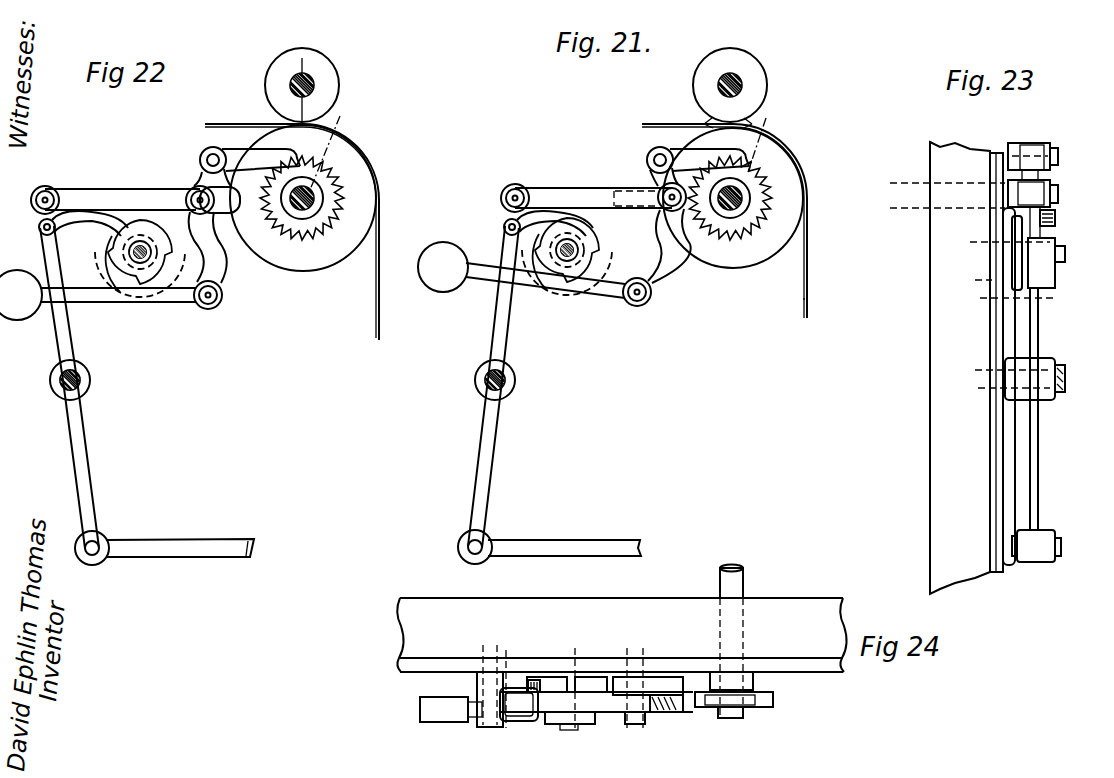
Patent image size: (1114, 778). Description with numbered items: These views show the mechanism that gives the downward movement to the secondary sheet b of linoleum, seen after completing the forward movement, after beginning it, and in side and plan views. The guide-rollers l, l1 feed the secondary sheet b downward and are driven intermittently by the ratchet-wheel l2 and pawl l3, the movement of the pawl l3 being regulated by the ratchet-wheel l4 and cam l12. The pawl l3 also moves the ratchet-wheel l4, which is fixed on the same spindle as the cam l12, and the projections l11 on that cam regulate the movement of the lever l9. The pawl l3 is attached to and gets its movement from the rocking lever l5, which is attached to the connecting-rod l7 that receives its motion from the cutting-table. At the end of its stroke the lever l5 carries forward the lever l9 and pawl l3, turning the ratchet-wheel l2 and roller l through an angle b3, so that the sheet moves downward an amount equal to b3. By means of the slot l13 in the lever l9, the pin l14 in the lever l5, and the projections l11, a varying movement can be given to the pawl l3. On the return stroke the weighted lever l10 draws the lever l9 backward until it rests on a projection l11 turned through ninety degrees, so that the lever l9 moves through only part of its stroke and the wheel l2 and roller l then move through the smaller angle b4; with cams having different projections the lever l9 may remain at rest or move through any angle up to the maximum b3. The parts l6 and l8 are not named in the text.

In FIG. 22, the guide-roller l is at (362, 216).
In FIG. 21, the guide-roller l is at (782, 208).
In FIG. 22, the guide-roller l1 is at (331, 116).
In FIG. 21, the guide-roller l1 is at (767, 94).
In FIG. 22, the ratchet-wheel l2 is at (335, 220).
In FIG. 21, the ratchet-wheel l2 is at (762, 222).
In FIG. 24, the ratchet-wheel l2 is at (762, 708).
In FIG. 22, the pawl l3 is at (291, 152).
In FIG. 21, the pawl l3 is at (722, 152).
In FIG. 23, the pawl l3 is at (1050, 150).
In FIG. 24, the pawl l3 is at (668, 708).
In FIG. 22, the ratchet-wheel l4 is at (158, 262).
In FIG. 21, the ratchet-wheel l4 is at (586, 266).
In FIG. 23, the ratchet-wheel l4 is at (1057, 242).
In FIG. 24, the ratchet-wheel l4 is at (588, 724).
In FIG. 22, the rocking lever l5 is at (60, 352).
In FIG. 21, the rocking lever l5 is at (506, 344).
In FIG. 23, the rocking lever l5 is at (1038, 340).
In FIG. 24, the rocking lever l5 is at (517, 722).
In FIG. 22, the link bar l6 is at (132, 191).
In FIG. 21, the link bar l6 is at (567, 192).
In FIG. 23, the link bar l6 is at (1058, 197).
In FIG. 24, the link bar l6 is at (630, 724).
In FIG. 22, the connecting-rod l7 is at (204, 540).
In FIG. 21, the connecting-rod l7 is at (563, 542).
In FIG. 23, the connecting-rod l7 is at (1050, 534).
In FIG. 22, the cam follower arm l8 is at (79, 227).
In FIG. 21, the cam follower arm l8 is at (510, 232).
In FIG. 23, the cam follower arm l8 is at (1056, 218).
In FIG. 24, the cam follower arm l8 is at (545, 722).
In FIG. 22, the lever l9 is at (216, 250).
In FIG. 21, the lever l9 is at (648, 270).
In FIG. 23, the lever l9 is at (1018, 144).
In FIG. 24, the lever l9 is at (632, 682).
In FIG. 22, the weighted lever l10 is at (21, 293).
In FIG. 21, the weighted lever l10 is at (478, 282).
In FIG. 24, the weighted lever l10 is at (470, 722).
In FIG. 22, the projections l11 is at (186, 207).
In FIG. 21, the projections l11 is at (590, 300).
In FIG. 24, the projections l11 is at (546, 678).
In FIG. 22, the cam l12 is at (199, 284).
In FIG. 21, the cam l12 is at (600, 283).
In FIG. 23, the cam l12 is at (1010, 263).
In FIG. 24, the cam l12 is at (592, 680).
In FIG. 22, the slot l13 is at (232, 196).
In FIG. 21, the slot l13 is at (640, 190).
In FIG. 22, the pin l14 is at (200, 160).
In FIG. 21, the pin l14 is at (679, 212).
In FIG. 22, the secondary sheet b is at (350, 126).
In FIG. 21, the secondary sheet b is at (778, 144).
In FIG. 21, the angle b3 is at (807, 280).
In FIG. 22, the angle b4 is at (335, 122).
In FIG. 21, the angle b4 is at (807, 232).